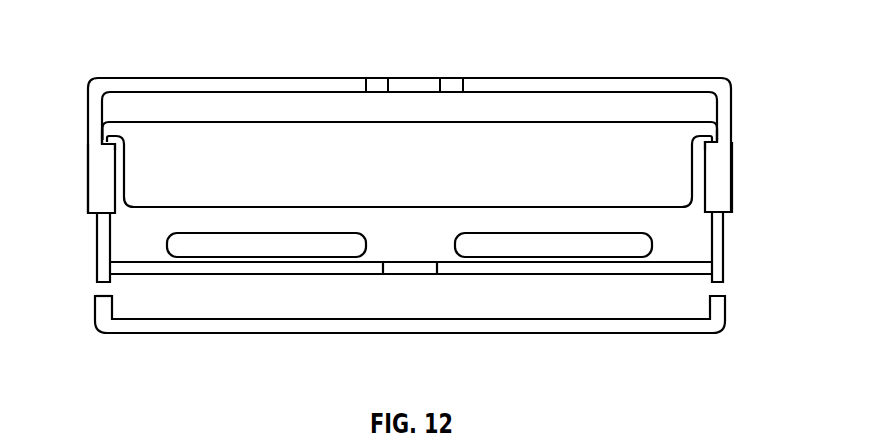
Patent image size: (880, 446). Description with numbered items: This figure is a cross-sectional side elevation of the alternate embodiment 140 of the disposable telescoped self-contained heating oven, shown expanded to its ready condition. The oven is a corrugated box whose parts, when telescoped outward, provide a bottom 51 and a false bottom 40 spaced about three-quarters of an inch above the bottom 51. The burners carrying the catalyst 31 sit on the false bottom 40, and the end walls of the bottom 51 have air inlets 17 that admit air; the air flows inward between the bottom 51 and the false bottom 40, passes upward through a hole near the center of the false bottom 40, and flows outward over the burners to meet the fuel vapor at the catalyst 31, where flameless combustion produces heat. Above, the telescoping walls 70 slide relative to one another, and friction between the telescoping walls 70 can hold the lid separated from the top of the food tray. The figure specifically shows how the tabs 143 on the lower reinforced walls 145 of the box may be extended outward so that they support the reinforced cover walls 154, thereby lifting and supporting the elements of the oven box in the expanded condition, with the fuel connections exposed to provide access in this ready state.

The alternate embodiment 140 is at (588, 54).
The tabs 143 is at (104, 139).
The reinforced cover walls 154 is at (88, 153).
The telescoping walls 70 is at (732, 170).
The lower reinforced walls 145 is at (97, 250).
The air inlets 17 is at (96, 288).
The bottom 51 is at (215, 333).
The catalyst 31 is at (556, 250).
The false bottom 40 is at (630, 268).